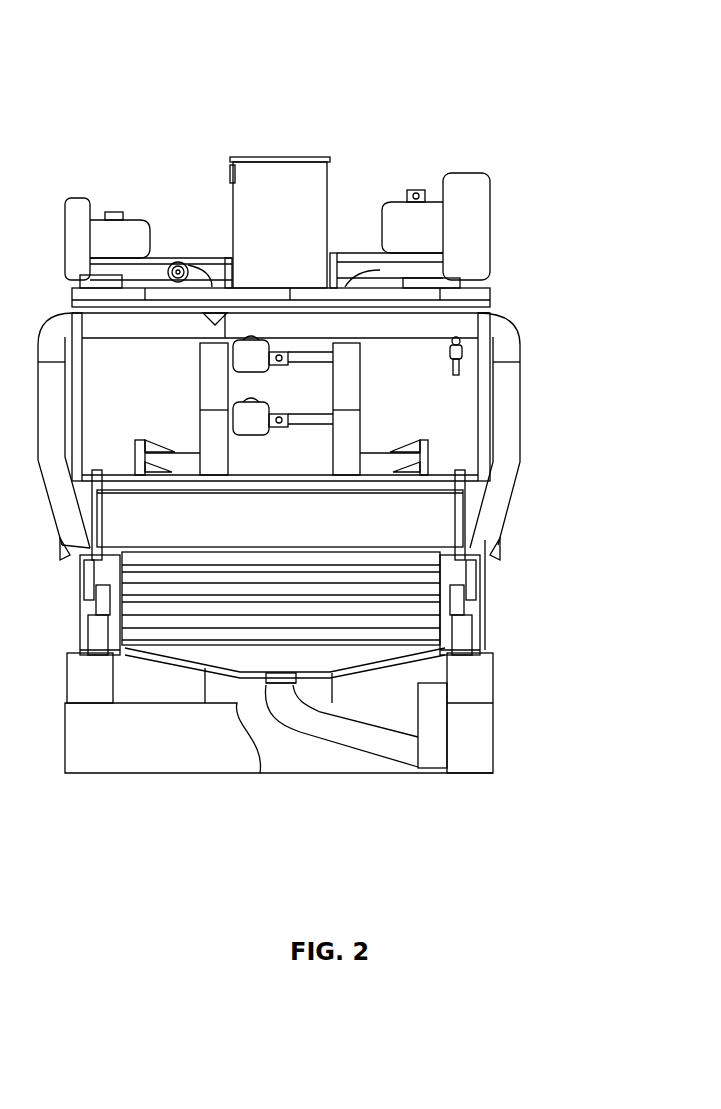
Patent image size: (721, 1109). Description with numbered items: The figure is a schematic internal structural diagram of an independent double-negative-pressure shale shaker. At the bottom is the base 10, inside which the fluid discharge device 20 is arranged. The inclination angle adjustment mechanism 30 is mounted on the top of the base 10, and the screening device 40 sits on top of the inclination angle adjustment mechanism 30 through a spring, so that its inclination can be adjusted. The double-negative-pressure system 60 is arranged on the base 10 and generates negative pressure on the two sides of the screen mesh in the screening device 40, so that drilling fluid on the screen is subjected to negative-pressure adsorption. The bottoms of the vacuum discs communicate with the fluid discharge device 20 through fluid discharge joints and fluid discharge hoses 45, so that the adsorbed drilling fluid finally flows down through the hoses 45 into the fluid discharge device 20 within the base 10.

The double-negative-pressure system 60 is at (262, 128).
The screening device 40 is at (165, 688).
The base 10 is at (200, 773).
The fluid discharge hose 45 is at (345, 745).
The fluid discharge device 20 is at (430, 775).
The inclination angle adjustment mechanism 30 is at (498, 600).